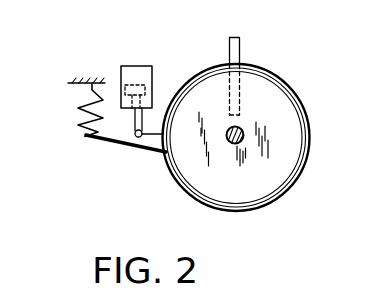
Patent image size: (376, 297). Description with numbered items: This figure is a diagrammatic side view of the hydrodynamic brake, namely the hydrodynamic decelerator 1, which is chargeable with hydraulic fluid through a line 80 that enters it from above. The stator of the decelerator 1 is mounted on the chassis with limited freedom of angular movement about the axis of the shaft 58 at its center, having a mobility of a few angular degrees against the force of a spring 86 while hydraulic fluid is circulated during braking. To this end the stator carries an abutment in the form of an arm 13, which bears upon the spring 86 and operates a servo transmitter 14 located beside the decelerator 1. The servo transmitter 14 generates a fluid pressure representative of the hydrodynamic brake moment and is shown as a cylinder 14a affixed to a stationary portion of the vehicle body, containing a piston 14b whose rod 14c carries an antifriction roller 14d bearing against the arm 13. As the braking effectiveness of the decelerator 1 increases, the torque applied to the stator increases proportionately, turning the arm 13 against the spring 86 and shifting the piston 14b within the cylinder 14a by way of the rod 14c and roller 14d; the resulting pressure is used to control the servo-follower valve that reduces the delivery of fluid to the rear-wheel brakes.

The hydrodynamic decelerator 1 is at (307, 160).
The shaft 58 is at (247, 130).
The line 80 is at (240, 52).
The servo transmitter 14 is at (142, 115).
The cylinder 14a is at (146, 77).
The piston 14b is at (137, 85).
The rod 14c is at (137, 115).
The antifriction roller 14d is at (140, 138).
The arm 13 is at (110, 142).
The spring 86 is at (78, 112).